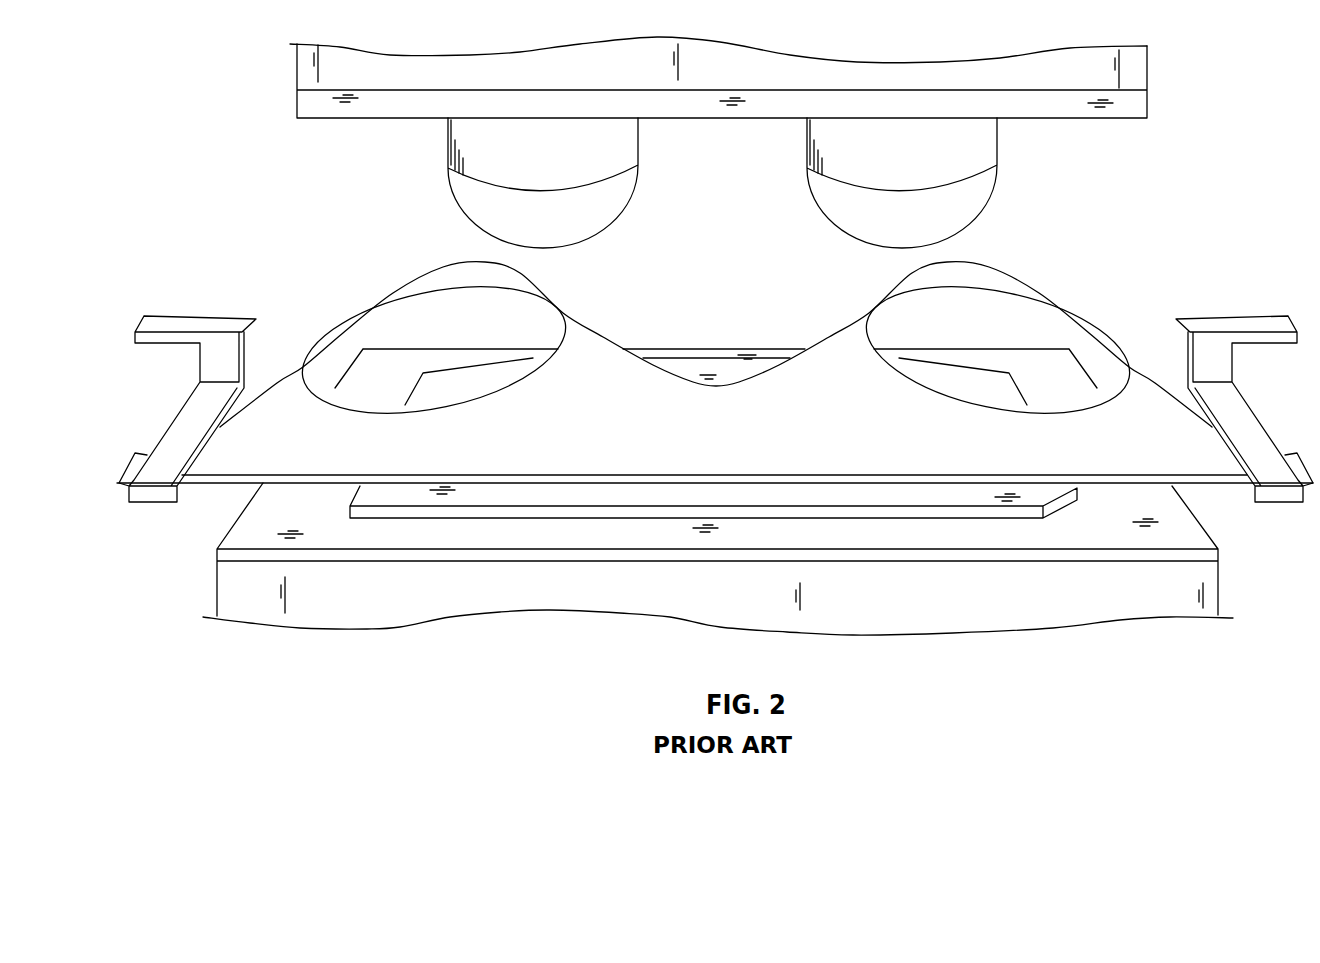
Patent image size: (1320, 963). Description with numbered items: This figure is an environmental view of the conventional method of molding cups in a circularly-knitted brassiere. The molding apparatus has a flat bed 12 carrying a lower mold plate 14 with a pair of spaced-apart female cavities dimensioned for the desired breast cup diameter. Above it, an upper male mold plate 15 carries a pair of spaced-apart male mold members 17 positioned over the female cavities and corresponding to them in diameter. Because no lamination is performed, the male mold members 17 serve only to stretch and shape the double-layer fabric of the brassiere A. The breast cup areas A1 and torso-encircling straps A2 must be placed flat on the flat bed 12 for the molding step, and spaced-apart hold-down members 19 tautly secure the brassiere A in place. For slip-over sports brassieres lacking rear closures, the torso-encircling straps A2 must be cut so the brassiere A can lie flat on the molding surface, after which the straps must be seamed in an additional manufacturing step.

The flat bed 12 is at (900, 532).
The lower mold plate 14 is at (510, 492).
The upper male mold plate 15 is at (1149, 106).
The male mold members 17 is at (462, 200).
The hold-down members 19 is at (166, 452).
The brassiere A is at (600, 318).
The breast cup areas A1 is at (596, 400).
The torso-encircling straps A2 is at (252, 462).